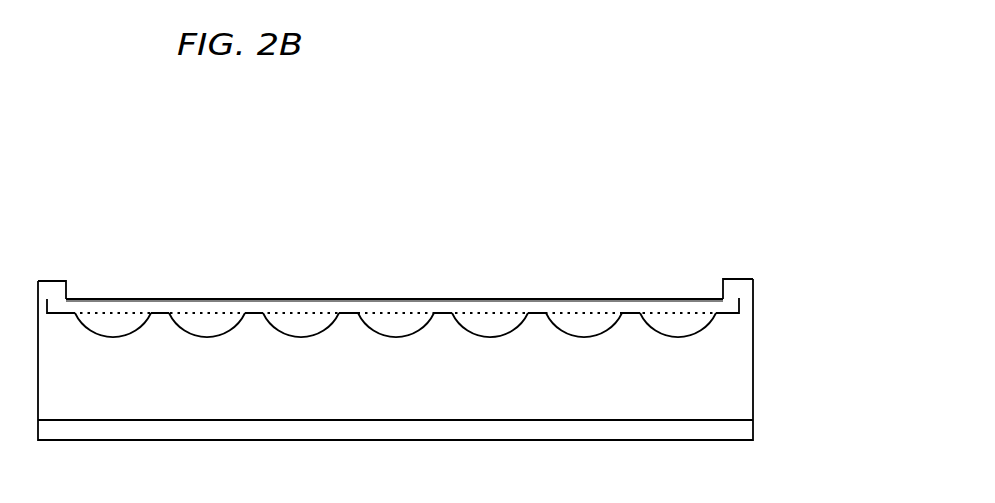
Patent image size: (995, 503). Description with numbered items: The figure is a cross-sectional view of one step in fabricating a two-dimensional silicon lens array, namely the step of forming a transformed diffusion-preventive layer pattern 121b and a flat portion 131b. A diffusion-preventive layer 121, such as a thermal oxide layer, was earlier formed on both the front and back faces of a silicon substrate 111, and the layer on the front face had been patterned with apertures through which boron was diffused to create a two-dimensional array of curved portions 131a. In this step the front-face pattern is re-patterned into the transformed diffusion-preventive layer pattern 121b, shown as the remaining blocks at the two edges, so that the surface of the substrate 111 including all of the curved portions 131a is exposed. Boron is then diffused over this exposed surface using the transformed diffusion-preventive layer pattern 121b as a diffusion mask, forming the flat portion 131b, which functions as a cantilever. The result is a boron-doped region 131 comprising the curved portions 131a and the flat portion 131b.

The silicon substrate 111 is at (753, 362).
The diffusion-preventive layer 121 is at (753, 420).
The transformed diffusion-preventive layer pattern 121b is at (753, 282).
The boron-doped region 131 is at (603, 197).
The curved portion 131a is at (397, 323).
The flat portion 131b is at (529, 297).